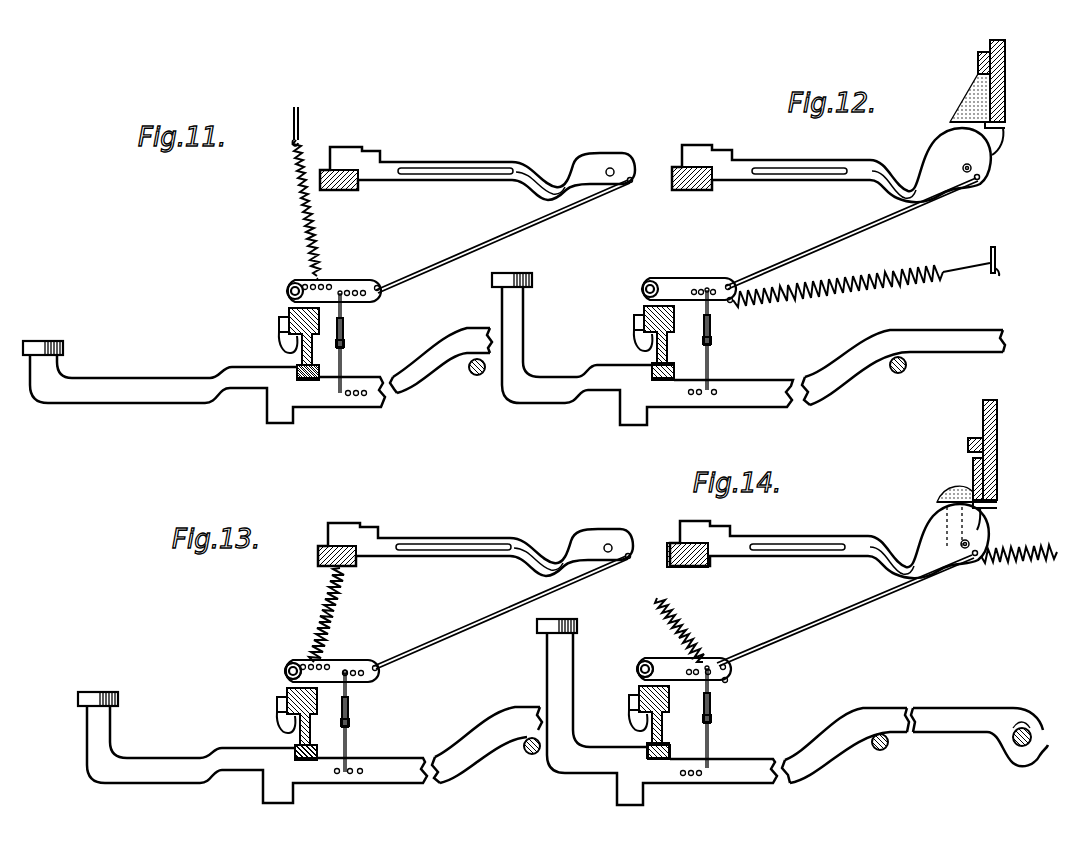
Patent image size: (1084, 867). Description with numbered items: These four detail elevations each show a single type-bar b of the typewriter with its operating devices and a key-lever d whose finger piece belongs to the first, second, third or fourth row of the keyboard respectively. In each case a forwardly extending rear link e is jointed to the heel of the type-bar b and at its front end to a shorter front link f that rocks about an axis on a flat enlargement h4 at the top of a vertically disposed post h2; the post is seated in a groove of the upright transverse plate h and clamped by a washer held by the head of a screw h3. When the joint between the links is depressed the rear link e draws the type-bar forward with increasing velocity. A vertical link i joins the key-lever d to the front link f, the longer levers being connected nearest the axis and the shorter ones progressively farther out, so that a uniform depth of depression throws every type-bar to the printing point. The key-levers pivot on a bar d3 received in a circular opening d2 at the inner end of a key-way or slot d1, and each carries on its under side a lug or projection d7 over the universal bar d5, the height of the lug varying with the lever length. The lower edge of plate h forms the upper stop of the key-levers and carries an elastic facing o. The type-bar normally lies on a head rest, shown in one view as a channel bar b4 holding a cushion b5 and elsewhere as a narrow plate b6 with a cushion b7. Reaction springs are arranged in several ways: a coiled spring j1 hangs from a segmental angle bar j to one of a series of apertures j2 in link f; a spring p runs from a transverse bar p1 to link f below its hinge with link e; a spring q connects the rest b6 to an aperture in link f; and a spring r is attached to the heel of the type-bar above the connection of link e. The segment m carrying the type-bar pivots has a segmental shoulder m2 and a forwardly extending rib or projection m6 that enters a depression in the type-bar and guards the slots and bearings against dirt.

In FIG. 11, the type-bar b is at (457, 181).
In FIG. 12, the type-bar b is at (798, 181).
In FIG. 13, the type-bar b is at (445, 560).
In FIG. 14, the type-bar b is at (829, 549).
In FIG. 11, the channel bar b4 is at (360, 190).
In FIG. 11, the cushion b5 is at (330, 191).
In FIG. 12, the plate b6 is at (700, 191).
In FIG. 13, the plate b6 is at (320, 566).
In FIG. 14, the plate b6 is at (692, 568).
In FIG. 12, the cushion b7 is at (677, 167).
In FIG. 14, the cushion b7 is at (672, 543).
In FIG. 11, the key-lever d is at (204, 392).
In FIG. 12, the key-lever d is at (642, 357).
In FIG. 13, the key-lever d is at (252, 747).
In FIG. 14, the key-lever d is at (661, 712).
In FIG. 14, the key-way or slot d1 is at (1037, 743).
In FIG. 14, the circular opening d2 is at (1016, 731).
In FIG. 14, the pivoted bar d3 is at (1029, 728).
In FIG. 11, the universal bar d5 is at (477, 375).
In FIG. 12, the universal bar d5 is at (898, 373).
In FIG. 13, the universal bar d5 is at (525, 753).
In FIG. 14, the universal bar d5 is at (880, 750).
In FIG. 11, the lug or projection d7 is at (472, 347).
In FIG. 12, the lug or projection d7 is at (899, 352).
In FIG. 13, the lug or projection d7 is at (526, 742).
In FIG. 14, the lug or projection d7 is at (870, 735).
In FIG. 11, the rear link e is at (503, 236).
In FIG. 12, the rear link e is at (822, 242).
In FIG. 13, the rear link e is at (484, 624).
In FIG. 14, the rear link e is at (845, 610).
In FIG. 11, the front link f is at (372, 304).
In FIG. 12, the front link f is at (673, 280).
In FIG. 13, the front link f is at (344, 662).
In FIG. 14, the front link f is at (673, 665).
In FIG. 11, the upright transverse plate h is at (290, 350).
In FIG. 12, the upright transverse plate h is at (645, 349).
In FIG. 13, the upright transverse plate h is at (300, 740).
In FIG. 14, the upright transverse plate h is at (650, 740).
In FIG. 11, the post h2 is at (283, 337).
In FIG. 12, the post h2 is at (640, 337).
In FIG. 14, the post h2 is at (640, 722).
In FIG. 11, the screw h3 is at (284, 320).
In FIG. 12, the screw h3 is at (640, 318).
In FIG. 13, the screw h3 is at (276, 702).
In FIG. 14, the screw h3 is at (632, 700).
In FIG. 13, the flat enlargement h4 is at (282, 660).
In FIG. 14, the flat enlargement h4 is at (644, 663).
In FIG. 11, the link i is at (346, 340).
In FIG. 12, the link i is at (707, 341).
In FIG. 13, the link i is at (350, 722).
In FIG. 14, the link i is at (705, 721).
In FIG. 11, the segmental angle bar j is at (306, 126).
In FIG. 11, the coiled spring j1 is at (297, 206).
In FIG. 14, the coiled spring j1 is at (687, 630).
In FIG. 11, the apertures j2 is at (333, 285).
In FIG. 12, the wall m is at (1006, 95).
In FIG. 14, the wall m is at (950, 470).
In FIG. 12, the segmental shoulder m2 is at (998, 136).
In FIG. 14, the segmental shoulder m2 is at (998, 500).
In FIG. 12, the segmental rib or projection m6 is at (952, 117).
In FIG. 14, the segmental rib or projection m6 is at (936, 502).
In FIG. 11, the facing o is at (314, 380).
In FIG. 12, the facing o is at (660, 380).
In FIG. 13, the facing o is at (304, 760).
In FIG. 14, the facing o is at (658, 760).
In FIG. 12, the spring p is at (884, 270).
In FIG. 12, the transverse bar p1 is at (1010, 251).
In FIG. 13, the type bar reaction spring q is at (312, 617).
In FIG. 14, the type bar reaction spring r is at (1019, 569).